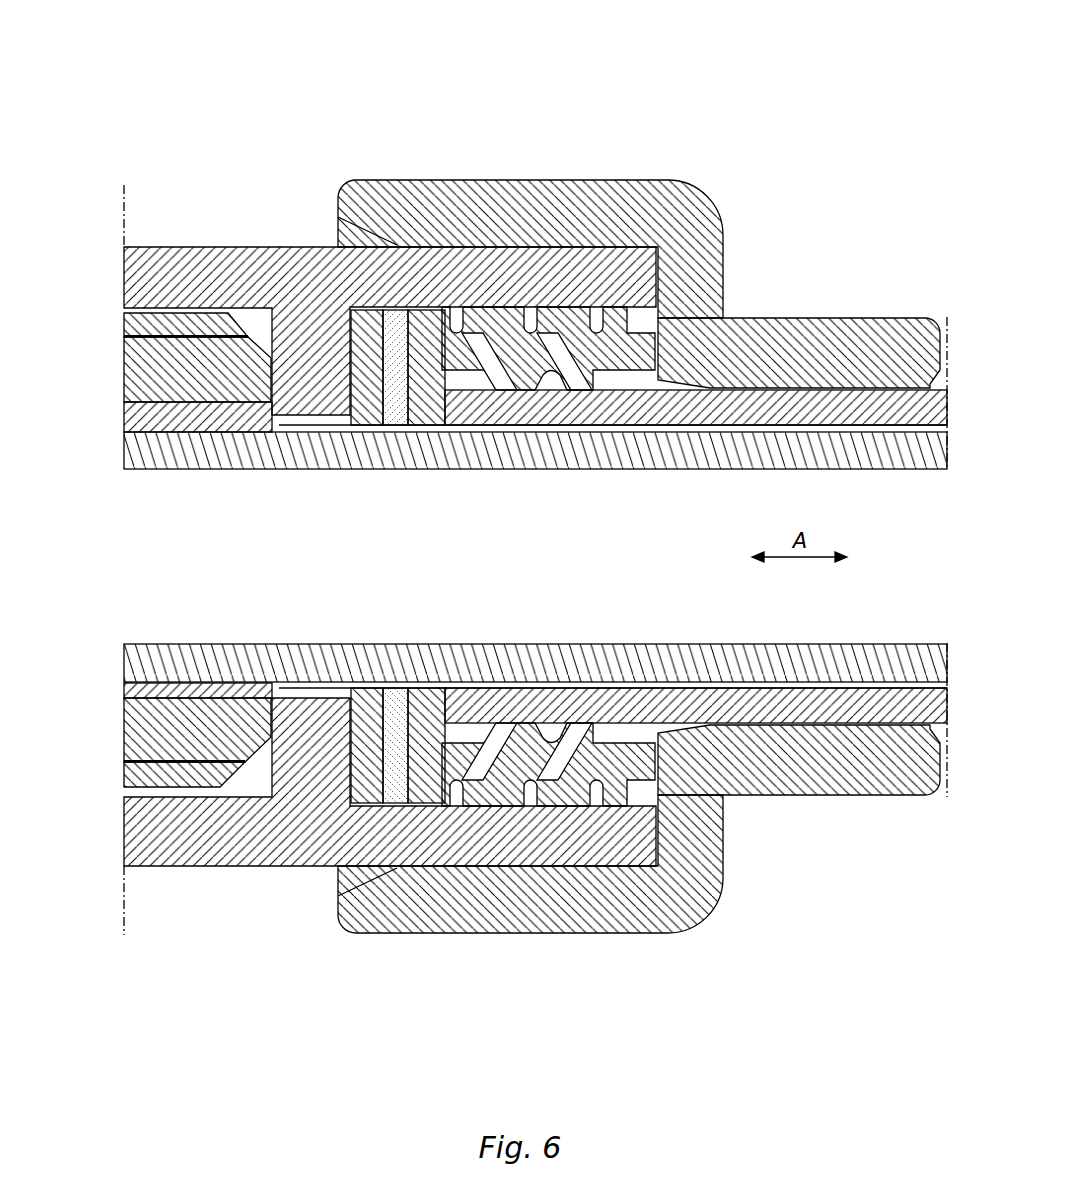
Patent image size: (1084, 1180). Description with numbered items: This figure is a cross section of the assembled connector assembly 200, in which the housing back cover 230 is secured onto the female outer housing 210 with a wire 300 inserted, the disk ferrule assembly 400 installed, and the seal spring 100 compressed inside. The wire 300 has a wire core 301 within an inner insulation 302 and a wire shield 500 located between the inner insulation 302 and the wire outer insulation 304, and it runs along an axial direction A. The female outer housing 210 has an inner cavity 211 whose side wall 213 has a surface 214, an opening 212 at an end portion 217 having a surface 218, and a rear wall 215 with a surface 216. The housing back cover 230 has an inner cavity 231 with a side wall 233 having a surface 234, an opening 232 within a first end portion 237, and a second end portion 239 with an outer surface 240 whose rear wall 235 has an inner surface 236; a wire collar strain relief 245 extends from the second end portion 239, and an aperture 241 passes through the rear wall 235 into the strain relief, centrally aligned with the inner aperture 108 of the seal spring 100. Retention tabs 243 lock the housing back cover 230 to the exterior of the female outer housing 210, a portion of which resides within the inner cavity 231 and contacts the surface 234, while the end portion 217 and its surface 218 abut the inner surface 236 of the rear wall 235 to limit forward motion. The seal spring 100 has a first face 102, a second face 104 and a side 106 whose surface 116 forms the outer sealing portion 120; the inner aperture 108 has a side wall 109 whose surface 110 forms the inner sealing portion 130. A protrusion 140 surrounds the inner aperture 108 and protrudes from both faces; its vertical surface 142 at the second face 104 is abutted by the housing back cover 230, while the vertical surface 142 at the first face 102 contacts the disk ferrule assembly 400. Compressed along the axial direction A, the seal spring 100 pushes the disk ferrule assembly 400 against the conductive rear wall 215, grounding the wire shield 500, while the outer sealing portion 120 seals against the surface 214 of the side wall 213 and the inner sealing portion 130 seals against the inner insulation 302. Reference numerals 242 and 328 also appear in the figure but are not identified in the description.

The connector assembly 200 is at (204, 120).
The female outer housing 210 is at (212, 272).
The opening 232 is at (352, 238).
The housing back cover 230 is at (805, 345).
The outer sealing portion 120 is at (548, 310).
The inner insulation 302 is at (835, 705).
The wire outer insulation 304 is at (790, 660).
The wire 300 is at (228, 585).
The wire core 301 is at (268, 598).
The disk ferrule assembly 400 is at (363, 725).
The wire shield 500 is at (398, 745).
The vertical surface 142 is at (410, 312).
The surface 216 is at (327, 322).
The rear wall 215 is at (300, 322).
The first face 102 is at (452, 307).
The seal spring 100 is at (485, 330).
The side 106 is at (512, 330).
The side surface 116 is at (600, 320).
The second face 104 is at (647, 325).
The opening 212 is at (655, 320).
The end portion 217 is at (663, 337).
The end portion surface 218 is at (683, 340).
The protrusion 140 is at (717, 327).
The inner aperture 108 is at (770, 352).
The wire collar strain relief 245 is at (800, 385).
The aperture 241 is at (830, 345).
The interface chamfer 242 is at (870, 380).
The retention tabs 243 is at (905, 375).
The first end portion 237 is at (342, 897).
The nut chamfer 328 is at (340, 910).
The surface 234 is at (420, 862).
The side wall 233 is at (443, 862).
The side wall 213 is at (513, 790).
The surface 214 is at (527, 790).
The inner cavity 211 is at (520, 790).
The inner cavity 231 is at (562, 778).
The inner sealing portion 130 is at (625, 740).
The side wall 109 is at (645, 733).
The second end portion 239 is at (650, 738).
The outer surface 240 is at (655, 745).
The surface 110 is at (660, 755).
The rear wall 235 is at (665, 765).
The inner surface 236 is at (670, 775).